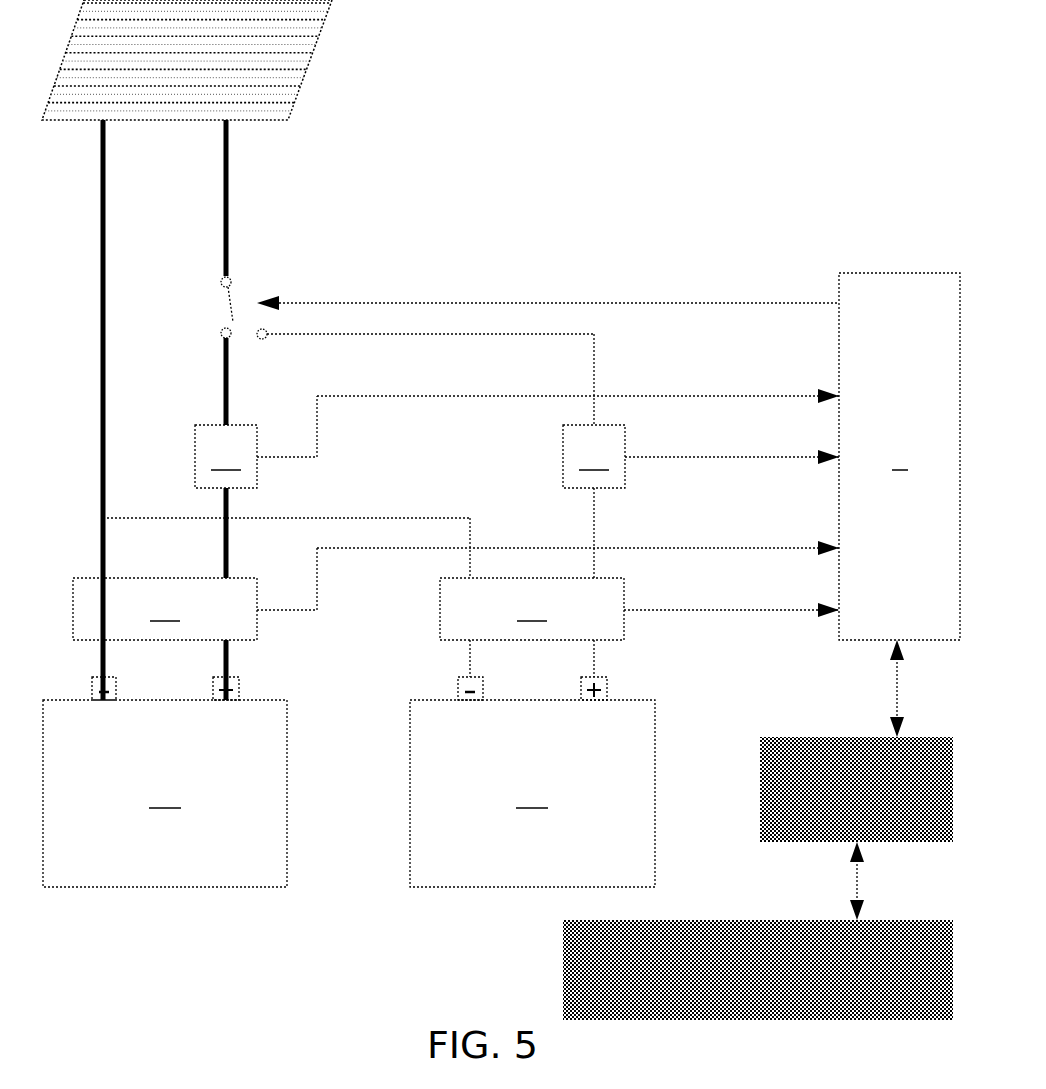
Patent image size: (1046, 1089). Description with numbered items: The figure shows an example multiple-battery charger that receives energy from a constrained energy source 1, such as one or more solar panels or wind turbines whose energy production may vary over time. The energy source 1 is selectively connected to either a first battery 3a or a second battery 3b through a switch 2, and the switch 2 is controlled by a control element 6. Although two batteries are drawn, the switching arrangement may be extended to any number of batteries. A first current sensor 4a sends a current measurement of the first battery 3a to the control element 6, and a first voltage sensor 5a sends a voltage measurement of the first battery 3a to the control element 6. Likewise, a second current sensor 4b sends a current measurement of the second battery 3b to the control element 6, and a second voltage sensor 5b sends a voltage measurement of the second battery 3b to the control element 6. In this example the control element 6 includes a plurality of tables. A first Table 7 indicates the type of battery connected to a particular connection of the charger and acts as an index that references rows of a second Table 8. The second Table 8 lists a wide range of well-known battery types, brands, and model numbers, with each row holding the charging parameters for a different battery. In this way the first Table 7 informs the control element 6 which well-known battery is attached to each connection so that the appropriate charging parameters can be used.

The energy source 1 is at (340, 33).
The switch 2 is at (217, 305).
The first battery 3a is at (165, 782).
The second battery 3b is at (532, 782).
The first current sensor 4a is at (517, 438).
The second current sensor 4b is at (701, 501).
The first voltage sensor 5a is at (456, 579).
The second voltage sensor 5b is at (639, 627).
The control element 6 is at (899, 505).
The first Table 7 is at (745, 781).
The second Table 8 is at (545, 977).